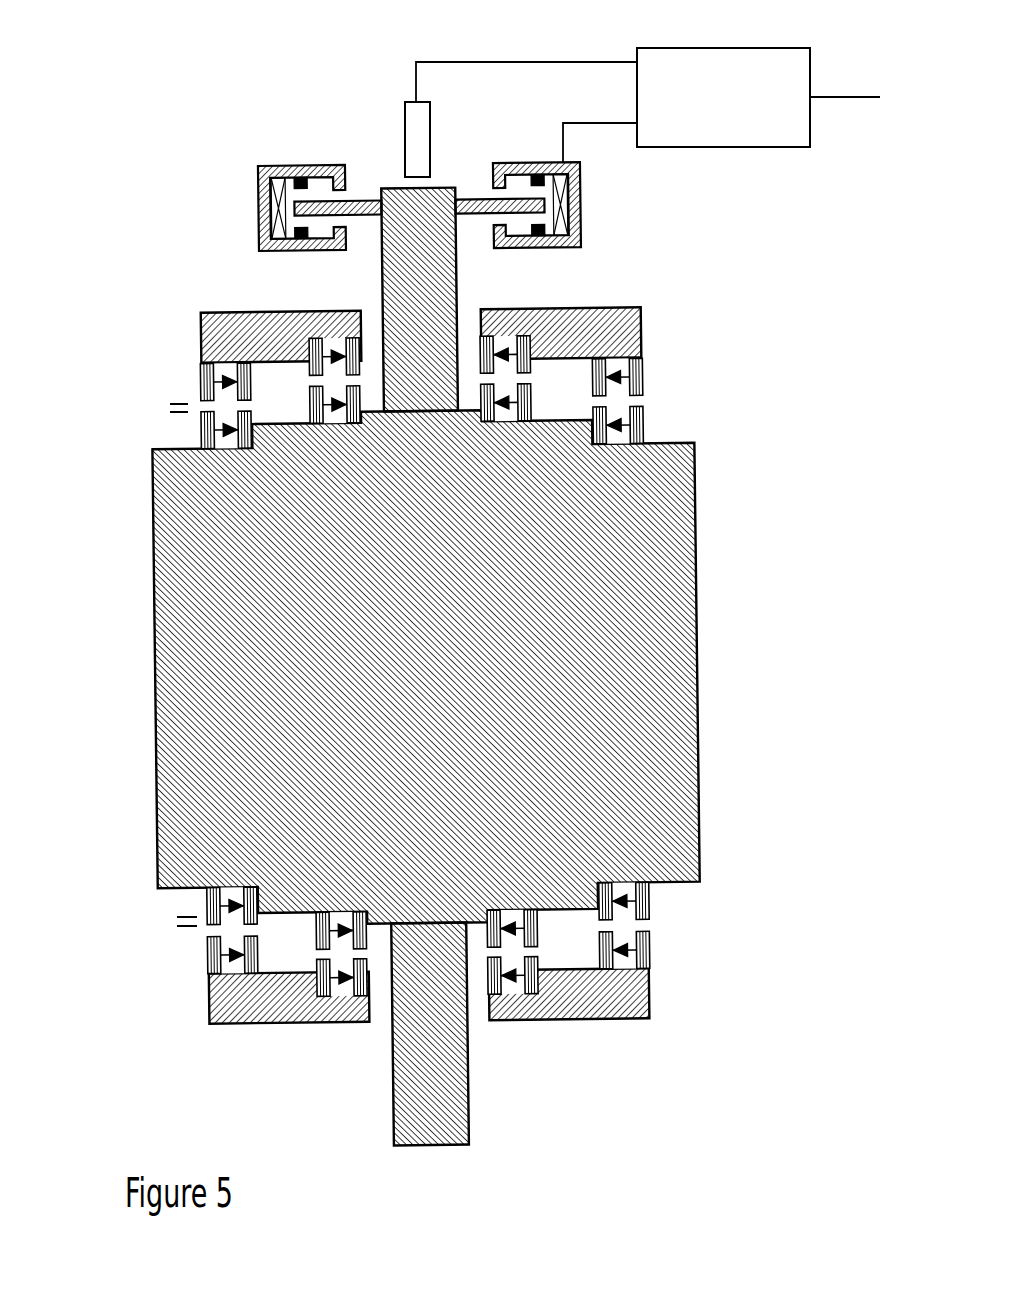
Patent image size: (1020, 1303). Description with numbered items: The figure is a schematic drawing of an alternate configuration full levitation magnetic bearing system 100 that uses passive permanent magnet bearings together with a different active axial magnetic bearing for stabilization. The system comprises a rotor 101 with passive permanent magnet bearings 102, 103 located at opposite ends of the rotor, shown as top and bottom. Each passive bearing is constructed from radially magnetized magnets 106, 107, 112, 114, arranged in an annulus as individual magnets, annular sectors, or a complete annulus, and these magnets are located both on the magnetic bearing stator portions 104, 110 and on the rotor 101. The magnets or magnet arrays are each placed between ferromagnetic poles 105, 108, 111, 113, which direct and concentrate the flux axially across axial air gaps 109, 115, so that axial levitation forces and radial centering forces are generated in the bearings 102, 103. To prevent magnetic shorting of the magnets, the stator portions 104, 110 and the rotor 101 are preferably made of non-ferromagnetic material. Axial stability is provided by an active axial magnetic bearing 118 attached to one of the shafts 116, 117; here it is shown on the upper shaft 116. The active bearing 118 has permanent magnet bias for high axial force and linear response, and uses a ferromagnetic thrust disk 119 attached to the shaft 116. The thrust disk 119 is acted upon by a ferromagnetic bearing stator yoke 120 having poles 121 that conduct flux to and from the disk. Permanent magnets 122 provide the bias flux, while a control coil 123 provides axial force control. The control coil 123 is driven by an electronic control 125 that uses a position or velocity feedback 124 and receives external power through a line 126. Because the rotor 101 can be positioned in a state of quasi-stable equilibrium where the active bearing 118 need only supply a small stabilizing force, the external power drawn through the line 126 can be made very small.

The full levitation magnetic bearing system 100 is at (122, 88).
The rotor 101 is at (152, 566).
The passive permanent magnet bearing 102 is at (192, 388).
The passive permanent magnet bearing 103 is at (196, 947).
The magnetic bearing stator portion 104 is at (202, 330).
The ferromagnetic pole 105 is at (256, 376).
The radially magnetized magnet 106 is at (338, 344).
The radially magnetized magnet 107 is at (322, 425).
The ferromagnetic pole 108 is at (200, 421).
The axial air gap 109 is at (155, 405).
The magnetic bearing stator portion 110 is at (208, 1005).
The ferromagnetic pole 111 is at (255, 968).
The radially magnetized magnet 112 is at (346, 984).
The ferromagnetic pole 113 is at (206, 898).
The radially magnetized magnet 114 is at (335, 912).
The axial air gap 115 is at (168, 923).
The shaft 116 is at (460, 268).
The shaft 117 is at (470, 1108).
The active axial magnetic bearing 118 is at (272, 183).
The ferromagnetic thrust disk 119 is at (382, 199).
The bearing stator yoke 120 is at (300, 164).
The pole 121 is at (492, 172).
The permanent magnet 122 is at (544, 234).
The control coil 123 is at (572, 212).
The position or velocity feedback 124 is at (406, 104).
The electronic control 125 is at (713, 47).
The line 126 is at (869, 100).